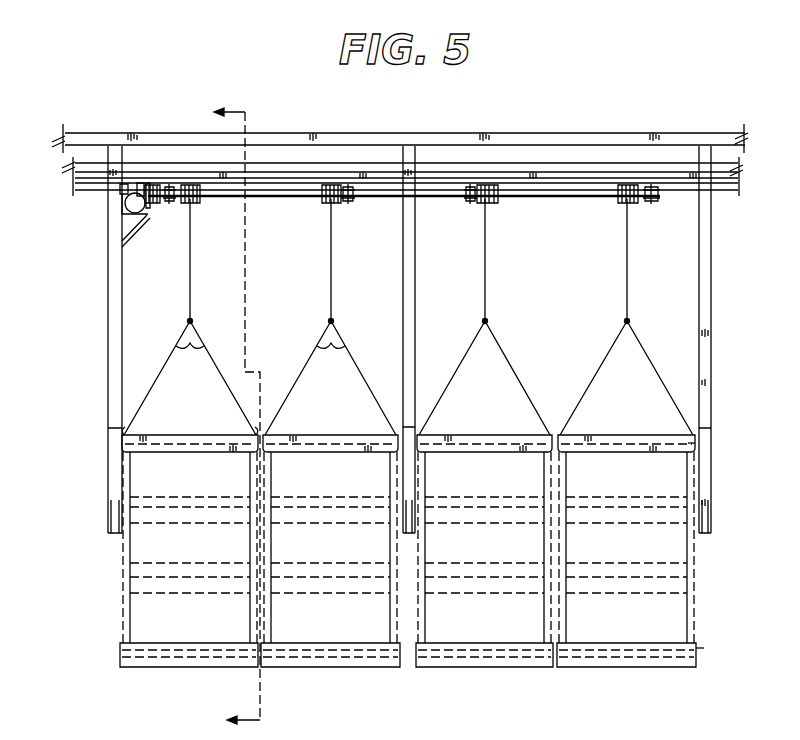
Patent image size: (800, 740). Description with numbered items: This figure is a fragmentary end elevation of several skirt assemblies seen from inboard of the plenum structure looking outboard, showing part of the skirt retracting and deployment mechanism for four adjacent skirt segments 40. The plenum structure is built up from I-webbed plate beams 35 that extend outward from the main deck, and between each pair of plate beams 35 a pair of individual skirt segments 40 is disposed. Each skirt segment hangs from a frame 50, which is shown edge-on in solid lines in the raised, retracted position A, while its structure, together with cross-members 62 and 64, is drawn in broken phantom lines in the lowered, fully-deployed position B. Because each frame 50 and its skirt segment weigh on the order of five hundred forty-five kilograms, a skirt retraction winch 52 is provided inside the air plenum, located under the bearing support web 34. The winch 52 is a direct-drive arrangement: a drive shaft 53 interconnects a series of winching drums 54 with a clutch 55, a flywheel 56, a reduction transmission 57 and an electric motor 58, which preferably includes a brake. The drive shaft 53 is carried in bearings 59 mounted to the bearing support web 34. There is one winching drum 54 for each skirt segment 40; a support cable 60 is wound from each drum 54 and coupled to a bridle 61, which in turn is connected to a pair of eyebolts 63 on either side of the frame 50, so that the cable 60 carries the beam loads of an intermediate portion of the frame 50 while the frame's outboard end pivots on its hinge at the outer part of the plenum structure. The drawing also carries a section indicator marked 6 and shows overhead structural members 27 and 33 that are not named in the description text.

The section line 6- 6 is at (226, 418).
The support column 27 is at (417, 268).
The overhead beam 33 is at (468, 133).
The bearing support web 34 is at (292, 170).
The I-webbed plate beam 35 is at (108, 487).
The skirt segment 40 is at (200, 672).
The frame 50 is at (209, 419).
The skirt retraction winch 52 is at (141, 181).
The drive shaft 53 is at (272, 198).
The winching drum 54 is at (196, 204).
The clutch 55 is at (151, 208).
The flywheel 56 is at (146, 213).
The reduction transmission 57 is at (120, 189).
The electric motor 58 is at (128, 207).
The bearing 59 is at (172, 189).
The support cable 60 is at (193, 267).
The bridle 61 is at (408, 378).
The cross-member 62 is at (145, 512).
The eyebolt 63 is at (125, 434).
The cross-member 64 is at (138, 582).
The retracted position A is at (690, 444).
The fully-deployed position B is at (704, 646).